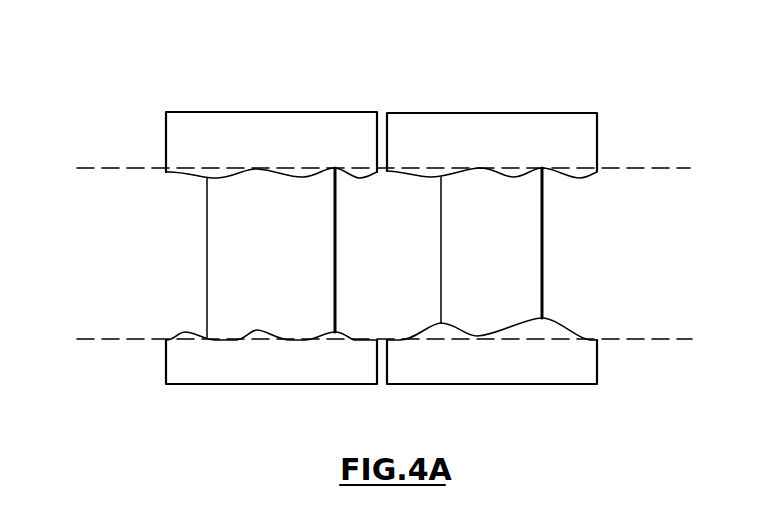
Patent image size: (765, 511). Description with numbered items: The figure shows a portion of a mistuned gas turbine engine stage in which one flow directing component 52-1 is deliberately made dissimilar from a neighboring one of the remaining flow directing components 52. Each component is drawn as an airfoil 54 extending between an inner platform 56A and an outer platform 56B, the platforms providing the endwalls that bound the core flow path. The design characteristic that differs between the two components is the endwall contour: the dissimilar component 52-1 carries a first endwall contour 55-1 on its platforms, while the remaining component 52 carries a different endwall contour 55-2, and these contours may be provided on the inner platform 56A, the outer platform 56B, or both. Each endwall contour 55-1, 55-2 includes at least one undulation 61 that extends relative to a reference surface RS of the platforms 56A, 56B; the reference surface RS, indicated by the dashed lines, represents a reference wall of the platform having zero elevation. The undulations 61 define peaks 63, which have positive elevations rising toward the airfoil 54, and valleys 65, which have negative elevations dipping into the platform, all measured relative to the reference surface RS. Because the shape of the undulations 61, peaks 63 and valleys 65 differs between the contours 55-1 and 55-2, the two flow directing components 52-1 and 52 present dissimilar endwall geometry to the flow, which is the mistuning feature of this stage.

The flow directing component 52 is at (603, 129).
The flow directing component 52-1 is at (162, 130).
The airfoil 54 is at (285, 256).
The endwall contour 55-1 is at (178, 189).
The endwall contour 55-2 is at (571, 191).
The inner platform 56A is at (320, 372).
The outer platform 56B is at (265, 125).
The undulation 61 is at (255, 330).
The peak 63 is at (300, 178).
The valley 65 is at (330, 170).
The reference surface RS is at (222, 168).